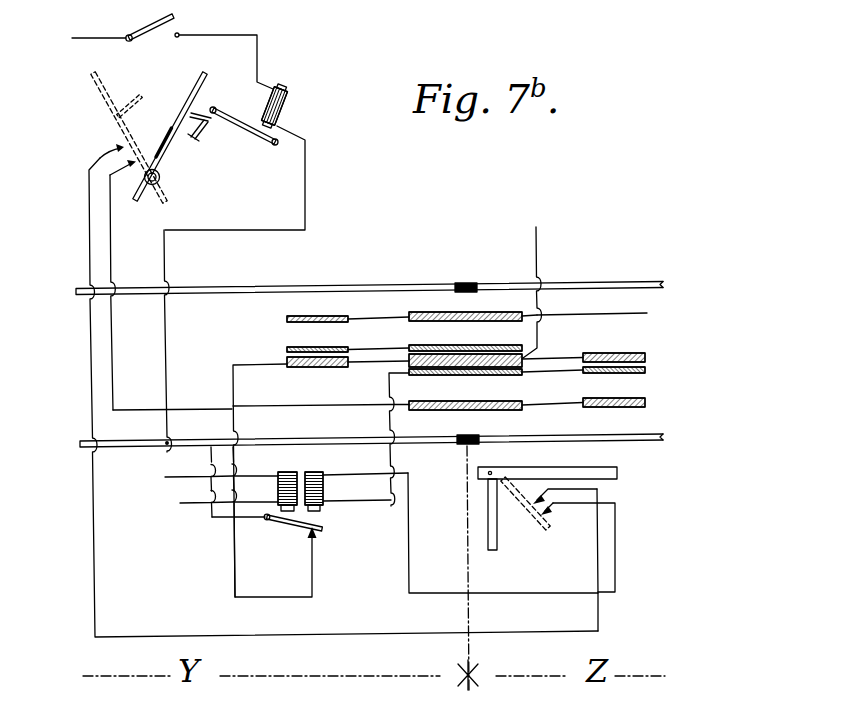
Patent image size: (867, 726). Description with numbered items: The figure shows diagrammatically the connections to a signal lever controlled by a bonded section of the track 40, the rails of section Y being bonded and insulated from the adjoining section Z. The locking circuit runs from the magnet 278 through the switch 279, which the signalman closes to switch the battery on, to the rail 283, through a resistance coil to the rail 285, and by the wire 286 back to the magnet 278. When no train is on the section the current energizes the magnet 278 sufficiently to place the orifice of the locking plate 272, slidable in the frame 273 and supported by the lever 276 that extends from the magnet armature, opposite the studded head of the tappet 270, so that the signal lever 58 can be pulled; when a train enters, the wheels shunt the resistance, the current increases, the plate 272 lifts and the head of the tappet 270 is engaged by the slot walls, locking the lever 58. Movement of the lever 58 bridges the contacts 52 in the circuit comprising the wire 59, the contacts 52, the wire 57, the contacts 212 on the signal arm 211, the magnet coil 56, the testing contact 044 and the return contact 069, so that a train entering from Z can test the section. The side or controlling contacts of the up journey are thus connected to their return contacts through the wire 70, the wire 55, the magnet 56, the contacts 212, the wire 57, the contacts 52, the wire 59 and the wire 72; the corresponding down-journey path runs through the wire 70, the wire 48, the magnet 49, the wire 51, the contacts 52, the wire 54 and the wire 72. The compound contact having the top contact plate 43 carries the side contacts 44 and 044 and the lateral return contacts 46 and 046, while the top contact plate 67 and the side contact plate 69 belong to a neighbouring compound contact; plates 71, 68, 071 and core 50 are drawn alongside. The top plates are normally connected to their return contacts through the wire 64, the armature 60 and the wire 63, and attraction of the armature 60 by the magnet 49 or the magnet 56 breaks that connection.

The switch 279 is at (160, 30).
The magnet 278 is at (285, 91).
The signal lever 58 is at (203, 83).
The tappet 270 is at (210, 111).
The frame 273 is at (196, 142).
The locking plate 272 is at (223, 124).
The lever 276 is at (248, 121).
The contacts 52 is at (128, 137).
The wire 286 is at (305, 188).
The wire 59 is at (112, 222).
The wire 57 is at (90, 272).
The track 40 is at (623, 282).
The rail 285 is at (129, 441).
The rail 283 is at (142, 294).
The wire 48 is at (536, 263).
The wire 54 is at (607, 313).
The contact bar 71 is at (327, 316).
The side or controller contact plate 69 is at (330, 347).
The top contact plate 67 is at (335, 367).
The wire 72 is at (387, 318).
The wire 70 is at (390, 348).
The conductor 68 is at (388, 362).
The lateral return contact 46 is at (468, 312).
The side or controller contact 44 is at (477, 345).
The top contact plate 43 is at (543, 348).
The testing contact 044 is at (484, 376).
The lateral return contact 046 is at (490, 410).
The return contact 069 is at (620, 373).
The contact bar 071 is at (622, 407).
The wire 63 is at (257, 363).
The wire 55 is at (389, 390).
The wire 51 is at (197, 475).
The wire 64 is at (220, 520).
The magnet 49 is at (278, 485).
The magnet coil 56 is at (323, 490).
The core 50 is at (300, 484).
The armature 60 is at (290, 525).
The signal 211 is at (494, 537).
The contacts 212 is at (532, 520).